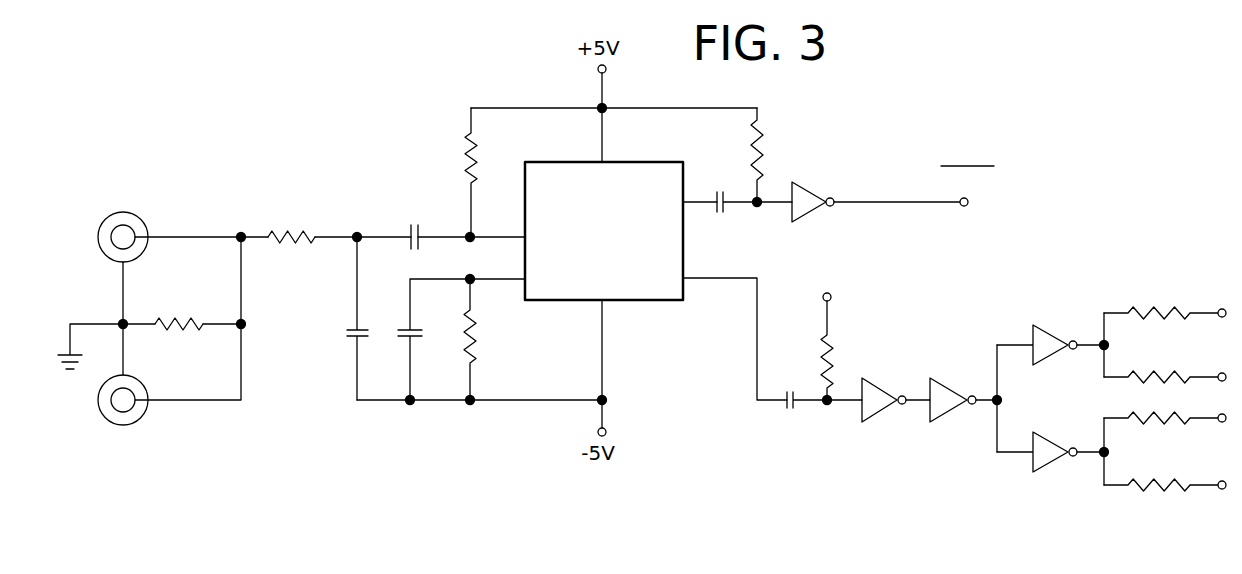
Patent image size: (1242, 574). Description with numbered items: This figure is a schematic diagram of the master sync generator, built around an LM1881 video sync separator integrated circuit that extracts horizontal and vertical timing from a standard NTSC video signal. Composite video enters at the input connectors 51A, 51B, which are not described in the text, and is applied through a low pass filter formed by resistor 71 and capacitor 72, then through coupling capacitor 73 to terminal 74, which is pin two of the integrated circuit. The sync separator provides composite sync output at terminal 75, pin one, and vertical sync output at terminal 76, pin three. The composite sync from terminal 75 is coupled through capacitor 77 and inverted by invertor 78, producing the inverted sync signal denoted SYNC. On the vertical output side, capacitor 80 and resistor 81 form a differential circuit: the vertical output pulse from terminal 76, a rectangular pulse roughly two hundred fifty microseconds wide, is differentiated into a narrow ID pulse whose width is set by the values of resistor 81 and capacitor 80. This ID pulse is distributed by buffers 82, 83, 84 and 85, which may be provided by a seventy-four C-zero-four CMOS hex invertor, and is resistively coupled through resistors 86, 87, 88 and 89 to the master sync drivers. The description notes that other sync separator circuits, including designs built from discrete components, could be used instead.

The input connector 51A is at (138, 221).
The input connector 51B is at (137, 421).
The resistor 71 is at (299, 227).
The capacitor 72 is at (348, 330).
The coupling capacitor 73 is at (410, 224).
The terminal 74 is at (525, 233).
The terminal 75 is at (688, 200).
The terminal 76 is at (688, 277).
The capacitor 77 is at (722, 209).
The invertor 78 is at (807, 184).
The capacitor 80 is at (790, 409).
The resistor 81 is at (828, 351).
The buffer 82 is at (866, 423).
The buffer 83 is at (944, 423).
The buffer 84 is at (1042, 325).
The buffer 85 is at (1053, 471).
The resistor 86 is at (1155, 312).
The resistor 87 is at (1155, 350).
The resistor 88 is at (1157, 421).
The resistor 89 is at (1152, 487).